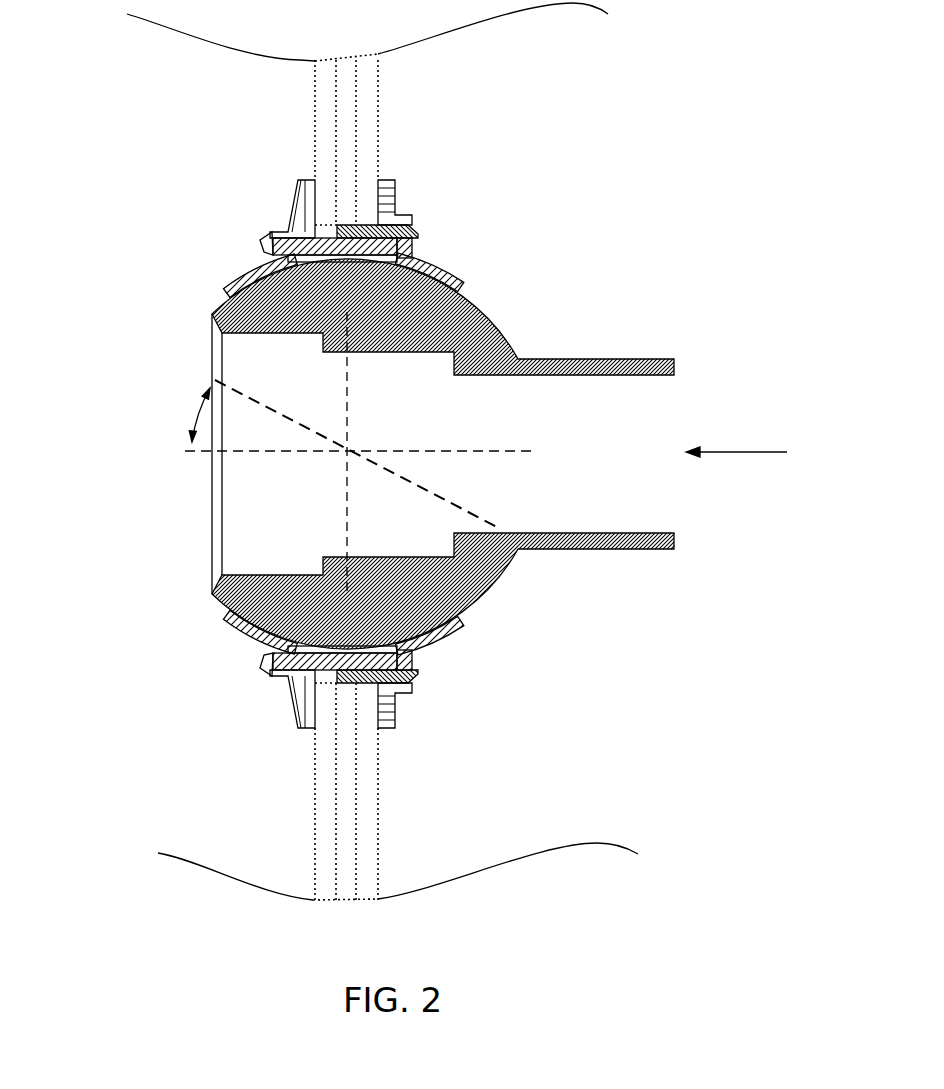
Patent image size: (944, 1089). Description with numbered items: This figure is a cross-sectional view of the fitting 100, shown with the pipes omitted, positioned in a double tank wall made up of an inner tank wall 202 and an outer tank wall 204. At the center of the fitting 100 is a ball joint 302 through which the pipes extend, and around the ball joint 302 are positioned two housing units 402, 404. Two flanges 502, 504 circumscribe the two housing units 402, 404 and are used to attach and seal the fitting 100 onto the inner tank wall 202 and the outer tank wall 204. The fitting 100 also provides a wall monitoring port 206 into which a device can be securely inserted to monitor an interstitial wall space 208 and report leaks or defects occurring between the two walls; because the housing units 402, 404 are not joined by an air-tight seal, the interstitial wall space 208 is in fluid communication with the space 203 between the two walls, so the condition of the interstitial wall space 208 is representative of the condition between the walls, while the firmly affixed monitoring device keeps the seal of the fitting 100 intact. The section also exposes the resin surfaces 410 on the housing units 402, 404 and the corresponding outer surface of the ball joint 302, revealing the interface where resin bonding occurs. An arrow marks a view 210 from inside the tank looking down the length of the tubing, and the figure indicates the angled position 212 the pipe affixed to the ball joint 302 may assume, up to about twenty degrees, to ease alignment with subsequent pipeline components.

The fitting 100 is at (121, 252).
The inner tank wall 202 is at (372, 812).
The space between the two walls 203 is at (347, 746).
The outer tank wall 204 is at (318, 784).
The wall monitoring port 206 is at (423, 253).
The interstitial wall space 208 is at (266, 667).
The view 210 is at (736, 443).
The angled position 212 is at (326, 453).
The ball joint 302 is at (497, 588).
The housing unit 402 is at (423, 242).
The housing unit 404 is at (275, 252).
The resin surfaces 410 is at (440, 645).
The flange 502 is at (387, 208).
The flange 504 is at (303, 200).